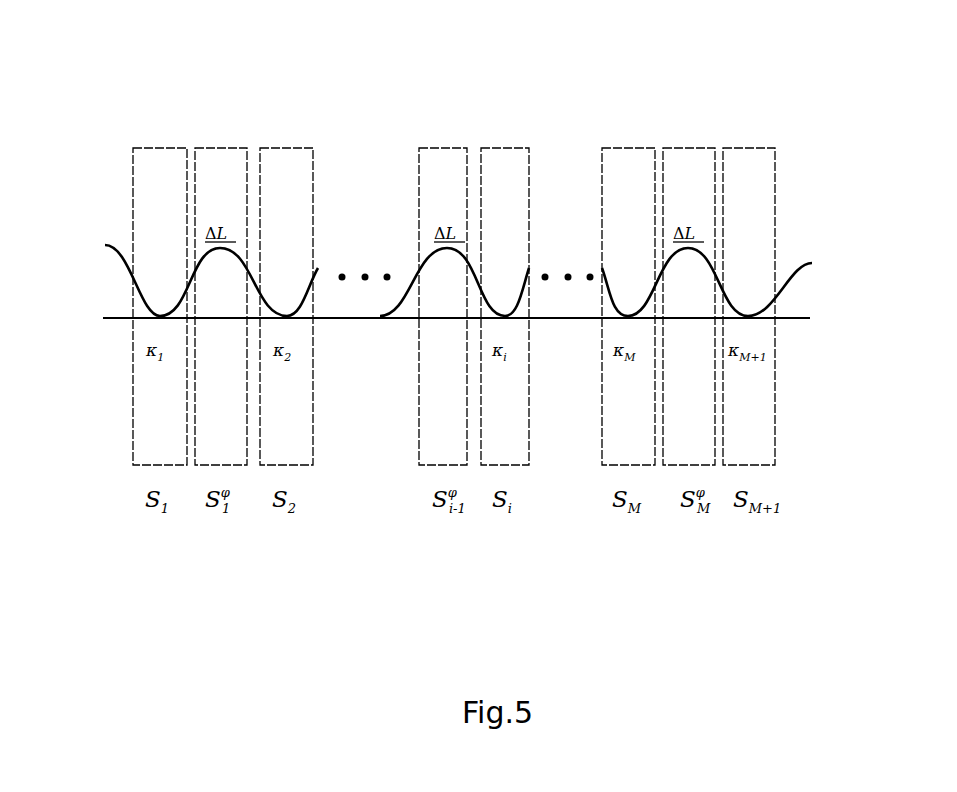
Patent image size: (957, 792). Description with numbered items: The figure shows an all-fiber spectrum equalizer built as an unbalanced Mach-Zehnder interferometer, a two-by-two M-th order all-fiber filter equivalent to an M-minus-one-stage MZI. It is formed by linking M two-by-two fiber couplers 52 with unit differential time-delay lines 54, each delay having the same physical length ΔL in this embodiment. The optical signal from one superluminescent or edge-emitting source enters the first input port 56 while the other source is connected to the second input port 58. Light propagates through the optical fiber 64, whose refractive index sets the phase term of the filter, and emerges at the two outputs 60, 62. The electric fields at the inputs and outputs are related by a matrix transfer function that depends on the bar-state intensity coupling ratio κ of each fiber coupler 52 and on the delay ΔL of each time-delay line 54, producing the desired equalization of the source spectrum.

The fiber coupler 52 is at (143, 440).
The differential time delay line 54 is at (237, 210).
The first input port 56 is at (175, 272).
The second input port 58 is at (63, 323).
The first output port 60 is at (747, 277).
The second output port 62 is at (854, 319).
The optical fiber 64 is at (358, 317).